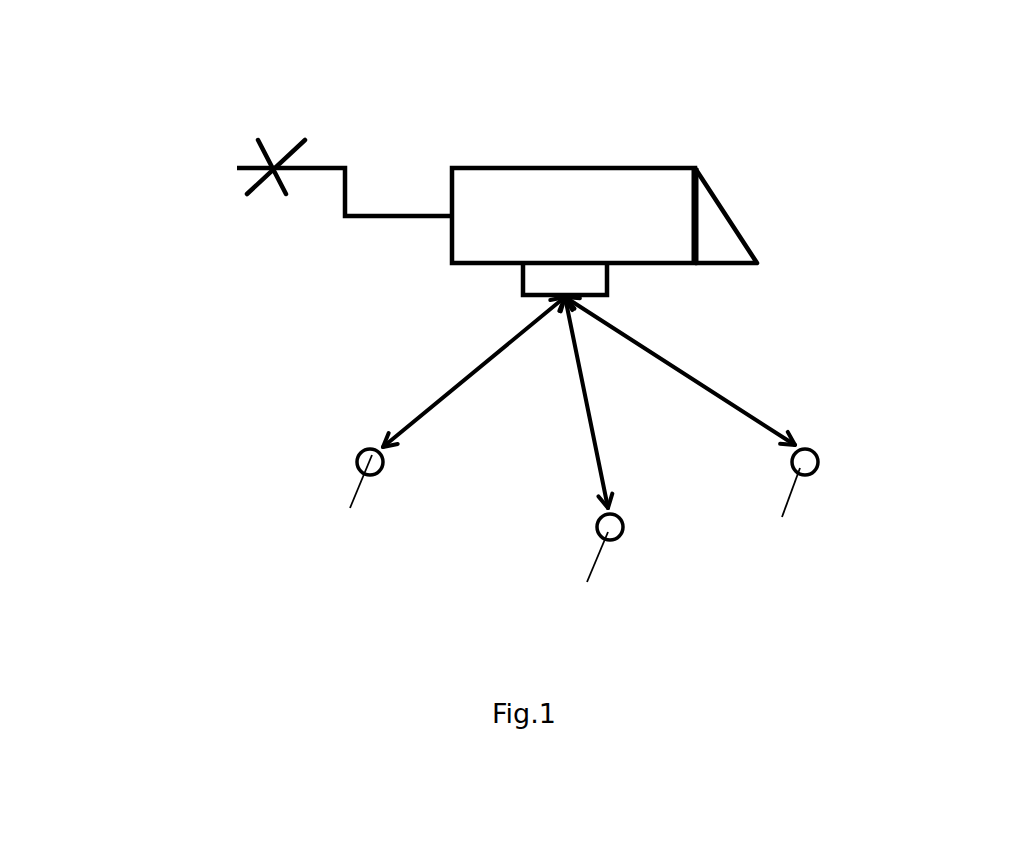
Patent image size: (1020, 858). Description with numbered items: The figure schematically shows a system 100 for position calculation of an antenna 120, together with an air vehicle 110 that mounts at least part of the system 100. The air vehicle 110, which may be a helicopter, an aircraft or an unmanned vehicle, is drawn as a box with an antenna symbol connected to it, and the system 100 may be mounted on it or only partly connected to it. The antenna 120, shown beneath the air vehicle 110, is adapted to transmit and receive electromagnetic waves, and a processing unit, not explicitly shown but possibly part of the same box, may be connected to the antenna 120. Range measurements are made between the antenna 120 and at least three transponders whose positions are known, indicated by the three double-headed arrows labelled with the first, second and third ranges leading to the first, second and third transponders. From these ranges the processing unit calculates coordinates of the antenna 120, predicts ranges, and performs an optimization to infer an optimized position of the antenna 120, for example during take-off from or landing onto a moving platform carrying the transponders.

The system 100 is at (177, 105).
The air vehicle 110 is at (638, 108).
The antenna 120 is at (453, 278).